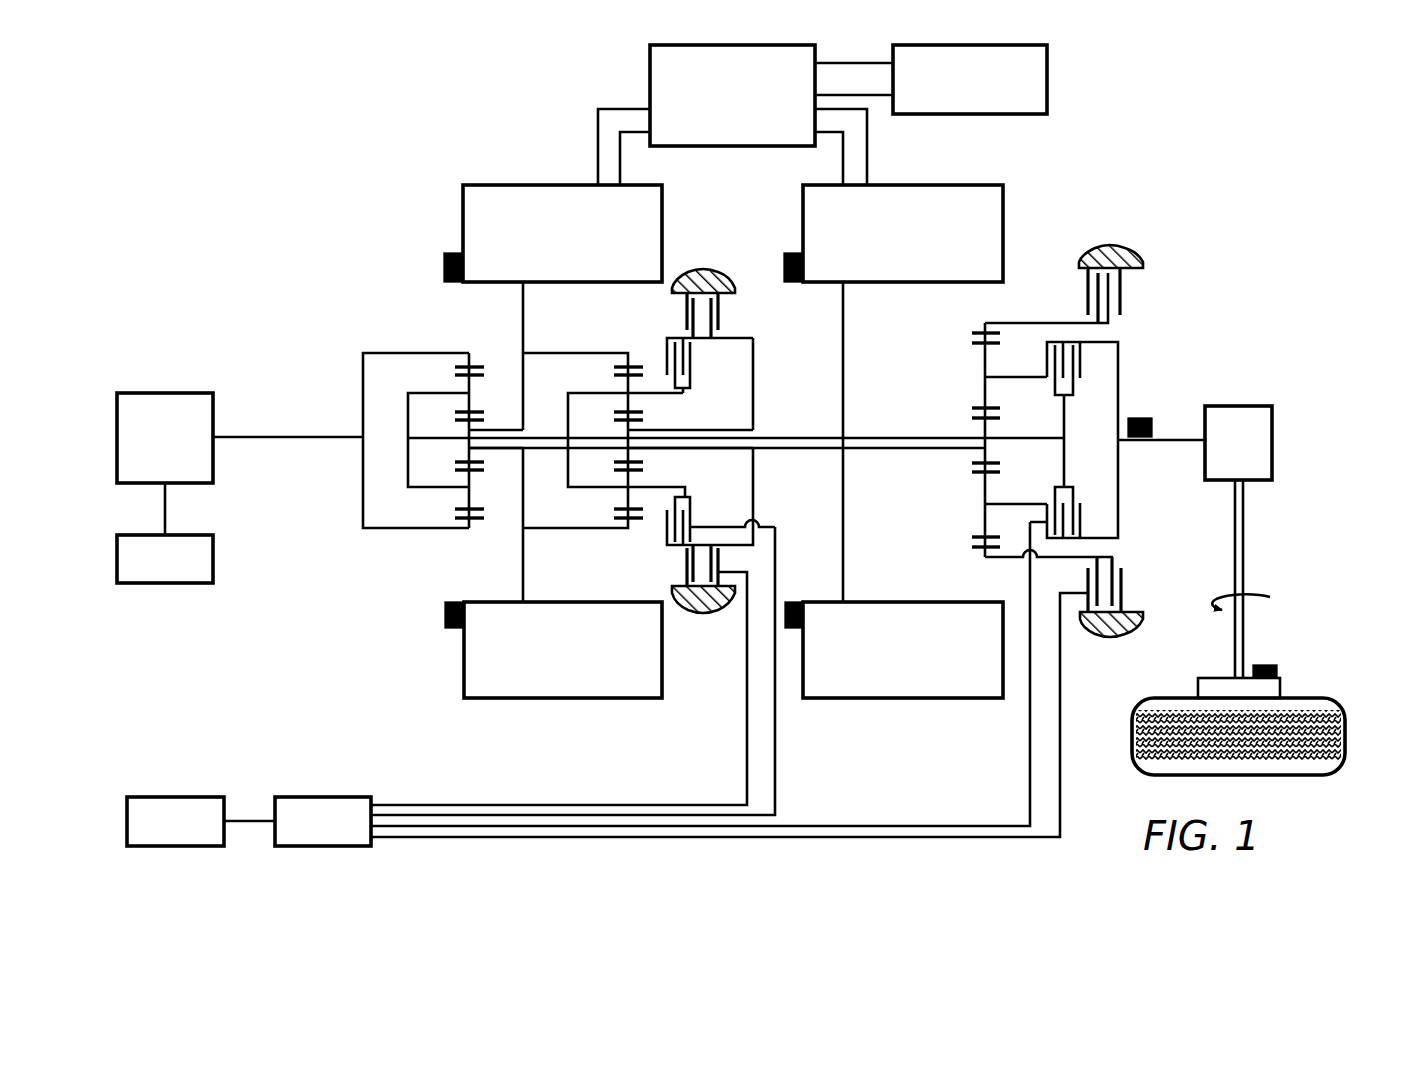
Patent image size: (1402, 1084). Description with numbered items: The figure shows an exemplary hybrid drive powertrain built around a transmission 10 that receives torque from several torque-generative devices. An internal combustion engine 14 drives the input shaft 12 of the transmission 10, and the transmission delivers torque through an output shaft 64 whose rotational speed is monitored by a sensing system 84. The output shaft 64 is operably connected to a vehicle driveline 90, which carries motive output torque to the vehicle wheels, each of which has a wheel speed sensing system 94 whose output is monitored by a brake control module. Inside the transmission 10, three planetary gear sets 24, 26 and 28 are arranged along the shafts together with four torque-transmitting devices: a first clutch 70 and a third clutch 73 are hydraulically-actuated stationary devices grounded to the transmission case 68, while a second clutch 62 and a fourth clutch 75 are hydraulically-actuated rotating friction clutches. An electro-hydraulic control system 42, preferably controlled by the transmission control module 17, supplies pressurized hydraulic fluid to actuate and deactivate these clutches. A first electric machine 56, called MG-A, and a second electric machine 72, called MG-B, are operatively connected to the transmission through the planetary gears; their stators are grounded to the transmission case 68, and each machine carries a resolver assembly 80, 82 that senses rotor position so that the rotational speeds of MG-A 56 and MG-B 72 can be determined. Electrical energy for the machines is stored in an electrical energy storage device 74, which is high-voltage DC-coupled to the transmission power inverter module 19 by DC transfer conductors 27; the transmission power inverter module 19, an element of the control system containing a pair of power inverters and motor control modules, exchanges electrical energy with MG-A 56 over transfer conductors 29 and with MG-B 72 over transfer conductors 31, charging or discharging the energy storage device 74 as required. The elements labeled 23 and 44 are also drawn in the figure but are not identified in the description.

The transmission 10 is at (422, 142).
The input shaft 12 is at (325, 435).
The engine 14 is at (165, 392).
The transmission control module 17 is at (163, 798).
The transmission power inverter module 19 is at (650, 63).
The engine control module 23 is at (213, 575).
The first planetary gear set 24 is at (460, 348).
The second planetary gear set 26 is at (622, 348).
The DC transfer conductors 27 is at (830, 60).
The third planetary gear set 28 is at (975, 320).
The transfer conductors 29 is at (598, 145).
The transfer conductors 31 is at (867, 140).
The electro-hydraulic control system 42 is at (290, 798).
The shaft 44 is at (568, 470).
The first electric machine 56 is at (463, 205).
The clutch C2 62 is at (1088, 380).
The output shaft 64 is at (1205, 430).
The transmission case 68 is at (700, 275).
The clutch C1 70 is at (1077, 286).
The second electric machine 72 is at (1003, 200).
The clutch C3 73 is at (728, 268).
The electrical energy storage device 74 is at (1047, 68).
The clutch C4 75 is at (705, 365).
The resolver assembly 80 is at (444, 265).
The resolver assembly 82 is at (793, 252).
The sensing system 84 is at (1140, 417).
The driveline 90 is at (1267, 591).
The wheel speed sensing system 94 is at (1265, 664).